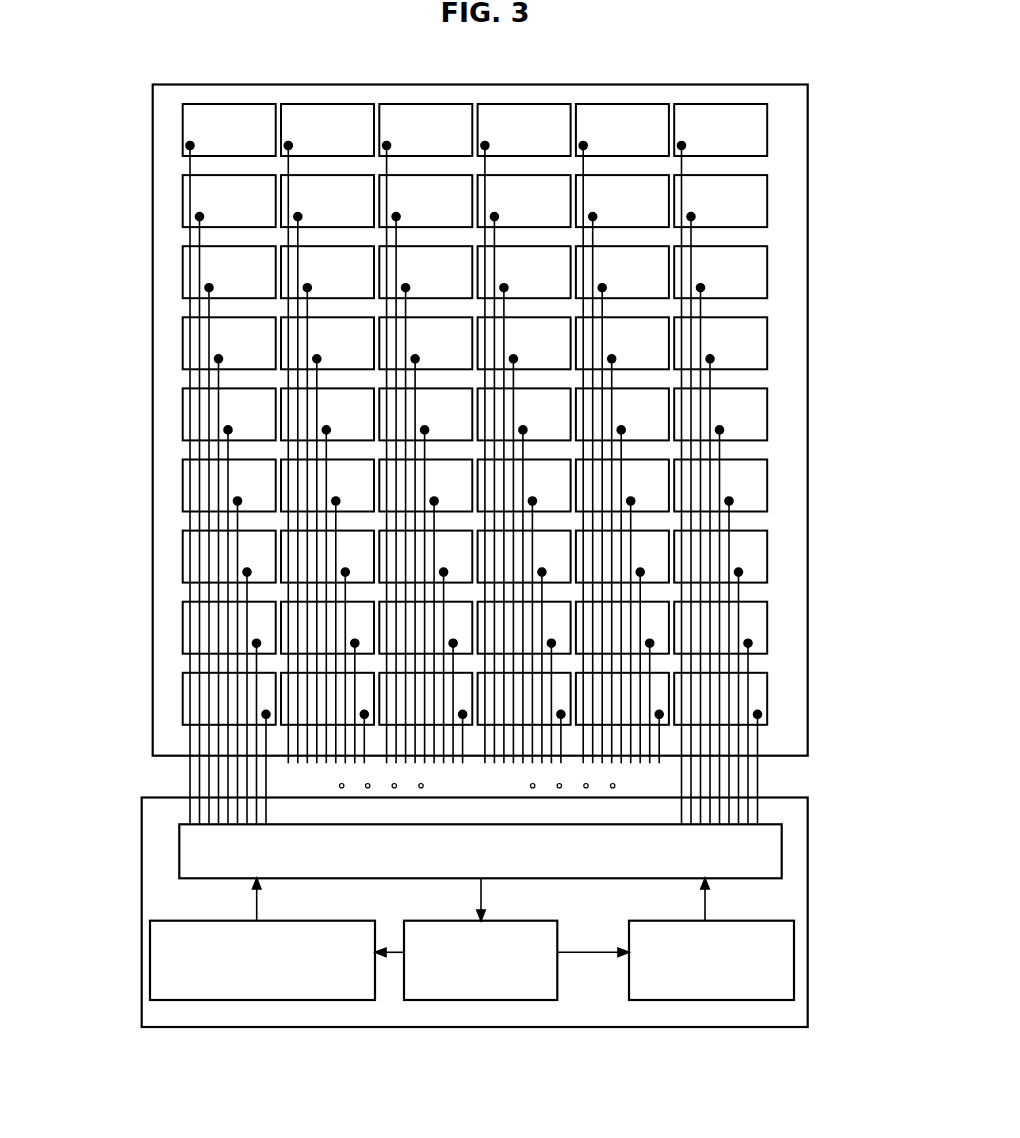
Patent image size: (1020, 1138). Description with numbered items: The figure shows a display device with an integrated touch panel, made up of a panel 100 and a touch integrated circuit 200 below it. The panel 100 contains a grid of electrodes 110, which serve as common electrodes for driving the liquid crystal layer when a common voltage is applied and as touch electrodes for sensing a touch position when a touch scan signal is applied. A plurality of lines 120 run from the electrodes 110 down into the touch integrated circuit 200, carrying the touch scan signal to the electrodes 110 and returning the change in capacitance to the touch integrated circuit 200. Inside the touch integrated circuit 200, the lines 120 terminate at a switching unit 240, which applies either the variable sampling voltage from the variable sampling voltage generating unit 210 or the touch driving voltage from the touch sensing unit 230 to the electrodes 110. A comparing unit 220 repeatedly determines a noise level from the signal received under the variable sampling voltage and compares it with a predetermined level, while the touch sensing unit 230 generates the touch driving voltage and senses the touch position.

The panel 100 is at (808, 201).
The electrodes 110 is at (203, 126).
The lines 120 is at (187, 197).
The touch integrated circuit 200 is at (808, 823).
The variable sampling voltage generating unit 210 is at (255, 1000).
The comparing unit 220 is at (480, 1000).
The touch sensing unit 230 is at (705, 1000).
The switching unit 240 is at (782, 852).